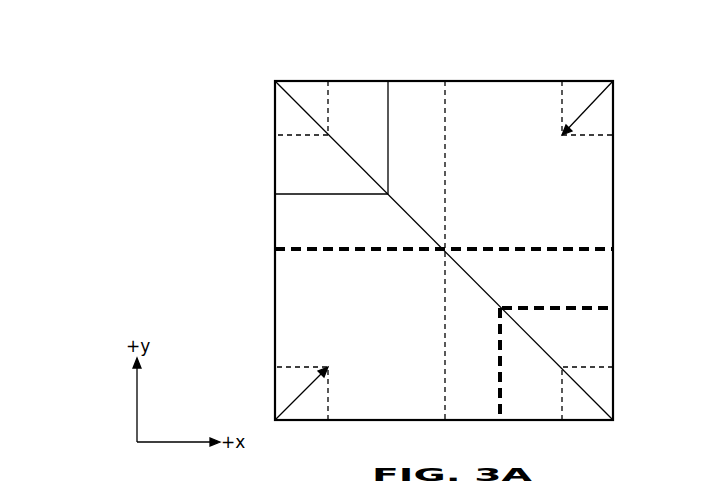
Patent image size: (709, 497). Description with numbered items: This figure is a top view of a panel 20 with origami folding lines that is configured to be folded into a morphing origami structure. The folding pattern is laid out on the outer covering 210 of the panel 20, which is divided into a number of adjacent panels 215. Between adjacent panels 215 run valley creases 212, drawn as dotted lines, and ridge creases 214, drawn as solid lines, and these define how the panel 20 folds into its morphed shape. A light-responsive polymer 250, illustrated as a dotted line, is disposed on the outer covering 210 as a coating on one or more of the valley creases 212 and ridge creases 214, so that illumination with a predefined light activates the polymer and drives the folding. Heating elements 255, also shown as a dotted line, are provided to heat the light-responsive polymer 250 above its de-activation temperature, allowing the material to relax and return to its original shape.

The panel 20 is at (634, 64).
The outer covering 210 is at (464, 82).
The valley creases 212 is at (294, 98).
The ridge creases 214 is at (333, 98).
The panels 215 is at (290, 116).
The light-responsive polymer 250 is at (297, 252).
The heating elements 255 is at (300, 242).